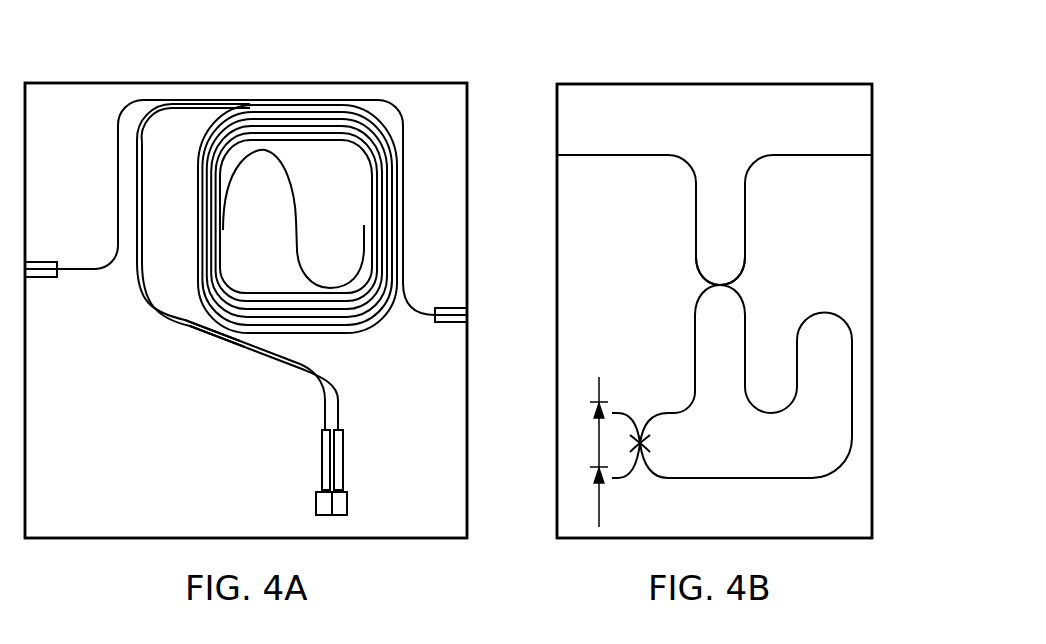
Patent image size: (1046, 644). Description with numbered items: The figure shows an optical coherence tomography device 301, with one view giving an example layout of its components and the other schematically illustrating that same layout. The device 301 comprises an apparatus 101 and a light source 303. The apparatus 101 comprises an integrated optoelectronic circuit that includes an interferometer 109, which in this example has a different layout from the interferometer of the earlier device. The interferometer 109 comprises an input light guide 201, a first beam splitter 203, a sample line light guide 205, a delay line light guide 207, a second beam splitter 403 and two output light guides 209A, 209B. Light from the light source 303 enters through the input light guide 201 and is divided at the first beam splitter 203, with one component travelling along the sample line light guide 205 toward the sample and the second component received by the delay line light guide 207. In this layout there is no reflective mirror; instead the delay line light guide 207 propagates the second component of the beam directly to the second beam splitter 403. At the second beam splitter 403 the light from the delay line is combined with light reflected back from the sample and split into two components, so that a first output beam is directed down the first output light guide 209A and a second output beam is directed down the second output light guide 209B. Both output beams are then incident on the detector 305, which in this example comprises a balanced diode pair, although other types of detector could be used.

In FIG. 4A, the apparatus 101 is at (433, 158).
In FIG. 4B, the apparatus 101 is at (857, 130).
In FIG. 4A, the interferometer 109 is at (303, 85).
In FIG. 4A, the input light guide 201 is at (130, 108).
In FIG. 4B, the input light guide 201 is at (665, 153).
In FIG. 4A, the first beam splitter 203 is at (282, 98).
In FIG. 4B, the first beam splitter 203 is at (720, 283).
In FIG. 4A, the sample line light guide 205 is at (410, 222).
In FIG. 4B, the sample line light guide 205 is at (793, 158).
In FIG. 4A, the delay line light guide 207 is at (297, 200).
In FIG. 4B, the delay line light guide 207 is at (770, 413).
In FIG. 4A, the first output light guide 209A is at (315, 388).
In FIG. 4B, the first output light guide 209A is at (612, 412).
In FIG. 4A, the second output light guide 209B is at (328, 376).
In FIG. 4B, the second output light guide 209B is at (620, 478).
In FIG. 4A, the optical coherence tomography device 301 is at (420, 72).
In FIG. 4B, the optical coherence tomography device 301 is at (821, 72).
In FIG. 4A, the light source 303 is at (40, 262).
In FIG. 4B, the light source 303 is at (560, 153).
In FIG. 4A, the detector 305 is at (348, 500).
In FIG. 4B, the detector 305 is at (603, 443).
In FIG. 4A, the second beam splitter 403 is at (207, 345).
In FIG. 4B, the second beam splitter 403 is at (640, 438).